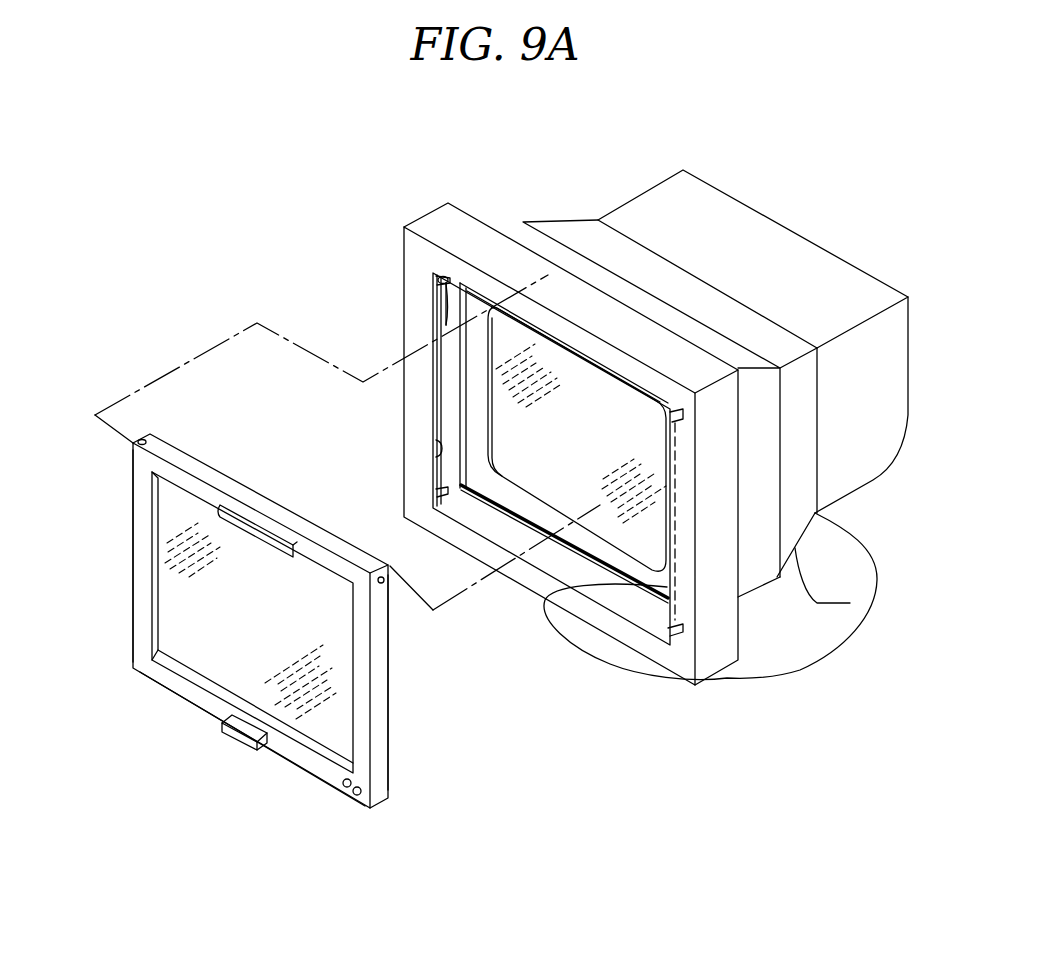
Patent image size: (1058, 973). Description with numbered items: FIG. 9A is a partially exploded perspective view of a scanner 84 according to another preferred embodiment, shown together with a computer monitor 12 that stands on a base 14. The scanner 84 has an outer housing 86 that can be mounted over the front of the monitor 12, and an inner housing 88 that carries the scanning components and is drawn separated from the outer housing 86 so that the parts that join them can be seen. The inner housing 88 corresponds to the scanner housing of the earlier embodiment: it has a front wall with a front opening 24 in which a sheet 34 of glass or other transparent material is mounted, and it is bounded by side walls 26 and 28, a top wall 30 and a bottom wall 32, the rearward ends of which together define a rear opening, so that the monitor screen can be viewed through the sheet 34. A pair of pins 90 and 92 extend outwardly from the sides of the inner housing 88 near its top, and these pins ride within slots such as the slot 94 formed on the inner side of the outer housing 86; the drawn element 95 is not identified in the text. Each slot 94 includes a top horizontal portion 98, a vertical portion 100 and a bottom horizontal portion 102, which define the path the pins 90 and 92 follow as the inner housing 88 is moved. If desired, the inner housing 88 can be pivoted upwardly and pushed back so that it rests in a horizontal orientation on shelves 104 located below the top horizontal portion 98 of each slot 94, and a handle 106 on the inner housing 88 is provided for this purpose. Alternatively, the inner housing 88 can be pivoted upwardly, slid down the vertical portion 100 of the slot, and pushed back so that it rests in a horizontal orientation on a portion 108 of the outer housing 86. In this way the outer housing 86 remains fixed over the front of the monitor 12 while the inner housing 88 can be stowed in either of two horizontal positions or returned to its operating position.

The computer monitor 12 is at (853, 298).
The base 14 is at (827, 587).
The front opening 24 is at (190, 683).
The side wall 26 is at (133, 596).
The side wall 28 is at (380, 730).
The top wall 30 is at (237, 483).
The bottom wall 32 is at (320, 778).
The sheet 34 is at (198, 540).
The scanner 84 is at (222, 322).
The outer housing 86 is at (480, 222).
The inner housing 88 is at (166, 447).
The pin 90 is at (133, 453).
The pin 92 is at (382, 584).
The slot 94 is at (432, 408).
The right rail 95 is at (660, 584).
The top horizontal portion 98 is at (437, 277).
The vertical portion 100 is at (435, 453).
The bottom horizontal portion 102 is at (443, 492).
The shelf 104 is at (440, 325).
The handle 106 is at (235, 735).
The portion of the outer housing 108 is at (556, 571).